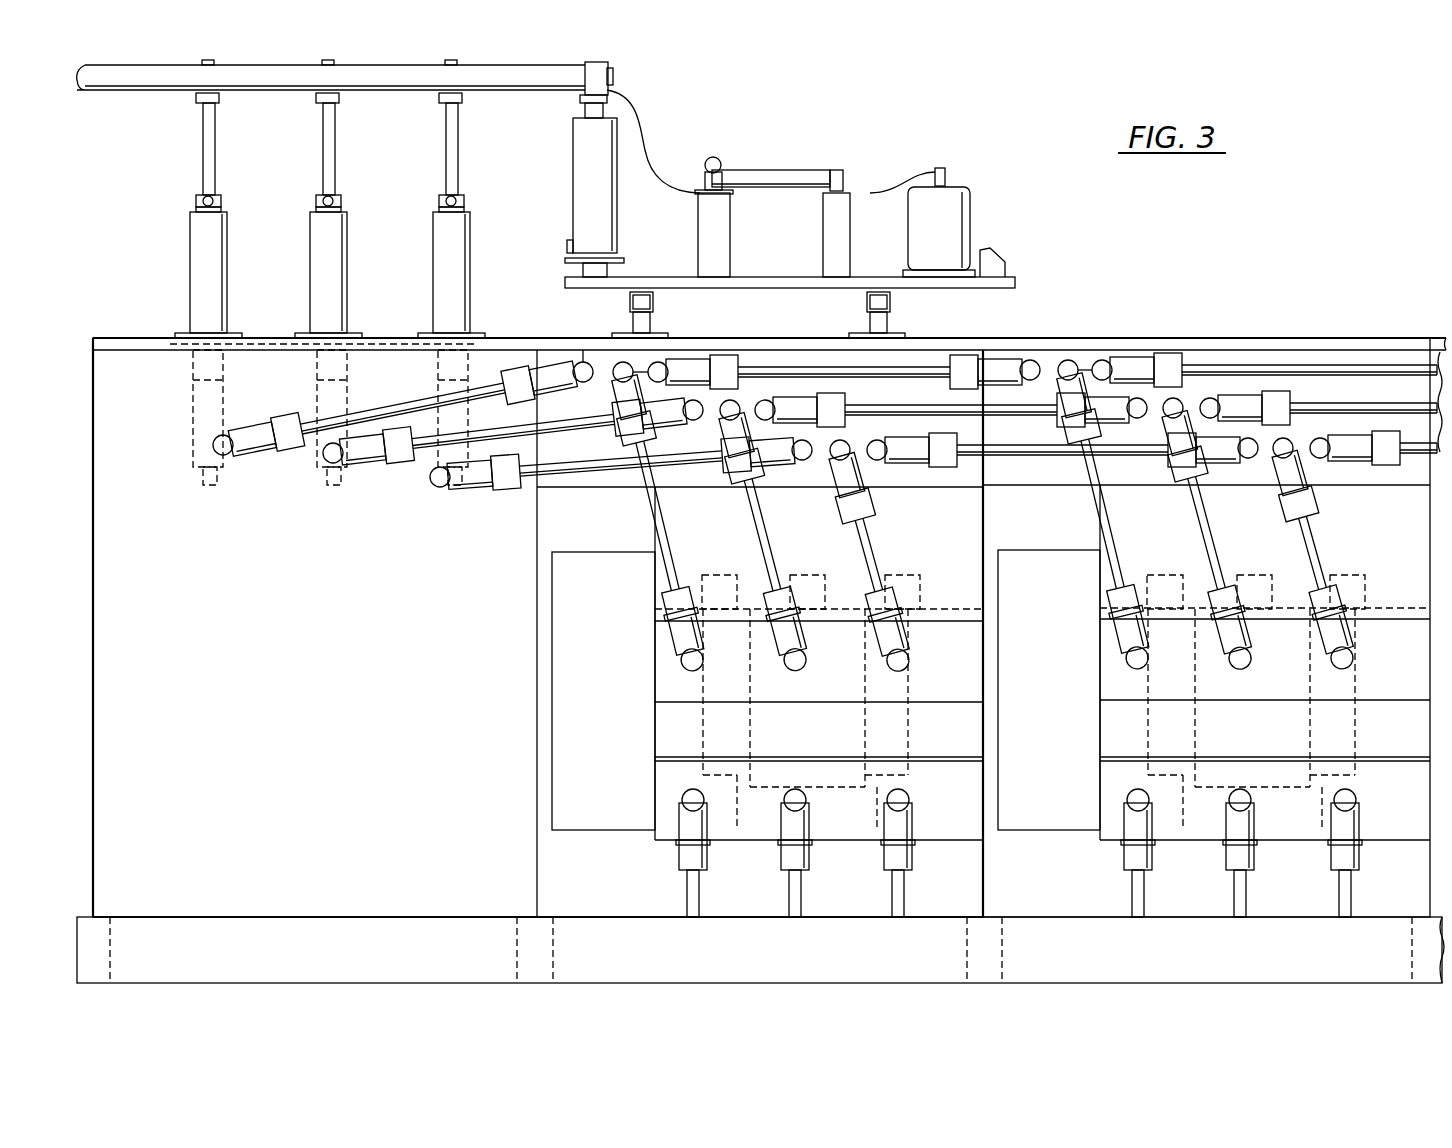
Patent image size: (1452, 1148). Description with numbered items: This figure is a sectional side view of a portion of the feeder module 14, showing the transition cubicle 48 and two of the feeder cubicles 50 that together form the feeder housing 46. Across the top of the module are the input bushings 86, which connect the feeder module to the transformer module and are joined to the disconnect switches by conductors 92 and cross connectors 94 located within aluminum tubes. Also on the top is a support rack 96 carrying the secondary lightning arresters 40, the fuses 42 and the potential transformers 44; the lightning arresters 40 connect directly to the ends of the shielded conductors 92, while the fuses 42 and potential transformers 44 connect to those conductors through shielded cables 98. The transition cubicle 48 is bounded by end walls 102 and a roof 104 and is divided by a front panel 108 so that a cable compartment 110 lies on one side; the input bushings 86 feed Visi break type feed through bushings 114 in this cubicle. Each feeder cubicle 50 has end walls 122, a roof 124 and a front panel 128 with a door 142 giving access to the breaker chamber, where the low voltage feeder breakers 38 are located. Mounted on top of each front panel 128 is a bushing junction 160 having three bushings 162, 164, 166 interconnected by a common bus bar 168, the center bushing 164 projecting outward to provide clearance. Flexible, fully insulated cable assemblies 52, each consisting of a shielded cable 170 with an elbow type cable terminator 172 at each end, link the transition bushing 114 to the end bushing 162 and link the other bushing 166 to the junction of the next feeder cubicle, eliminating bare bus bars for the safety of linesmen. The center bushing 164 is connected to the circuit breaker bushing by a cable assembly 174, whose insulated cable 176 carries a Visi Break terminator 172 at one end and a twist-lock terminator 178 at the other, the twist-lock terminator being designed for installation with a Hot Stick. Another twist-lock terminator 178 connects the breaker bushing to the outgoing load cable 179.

The feeder module 14 is at (152, 298).
The feeder breakers 38 is at (725, 573).
The secondary lightning arresters 40 is at (578, 153).
The fuses 42 is at (804, 166).
The potential transformers 44 is at (968, 205).
The feeder housing 46 is at (115, 331).
The transition cubicle 48 is at (315, 774).
The feeder cubicles 50 is at (762, 337).
The cable assemblies 52 is at (383, 397).
The input bushings 86 is at (227, 240).
The conductors 92 is at (283, 92).
The cross connectors 94 is at (322, 140).
The support rack 96 is at (777, 276).
The shielded cables 98 is at (645, 110).
The end walls 102 is at (93, 570).
The roof 104 is at (284, 336).
The front panel 108 is at (584, 876).
The cable compartment 110 is at (283, 561).
The feed through bushings 114 is at (213, 445).
The end walls 122 is at (535, 655).
The roof 124 is at (895, 336).
The front panel 128 is at (934, 609).
The door 142 is at (597, 555).
The bushing junctions 160 is at (620, 360).
The end bushing 162 is at (581, 352).
The center bushing 164 is at (640, 365).
The bushing 166 is at (666, 363).
The common bus bar 168 is at (578, 383).
The shielded cable 170 is at (485, 383).
The cable terminator 172 is at (560, 368).
The cable assemblies 174 is at (745, 503).
The insulated cable 176 is at (753, 520).
The twist-lock terminator 178 is at (680, 655).
The load cable 179 is at (788, 893).